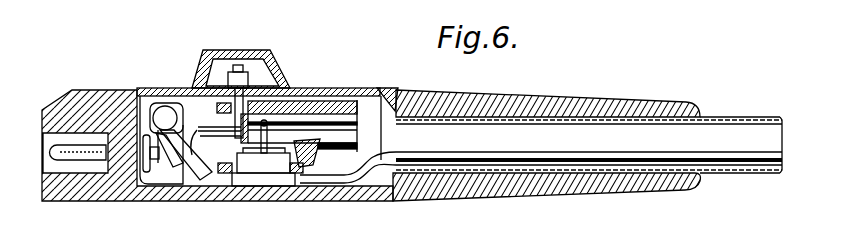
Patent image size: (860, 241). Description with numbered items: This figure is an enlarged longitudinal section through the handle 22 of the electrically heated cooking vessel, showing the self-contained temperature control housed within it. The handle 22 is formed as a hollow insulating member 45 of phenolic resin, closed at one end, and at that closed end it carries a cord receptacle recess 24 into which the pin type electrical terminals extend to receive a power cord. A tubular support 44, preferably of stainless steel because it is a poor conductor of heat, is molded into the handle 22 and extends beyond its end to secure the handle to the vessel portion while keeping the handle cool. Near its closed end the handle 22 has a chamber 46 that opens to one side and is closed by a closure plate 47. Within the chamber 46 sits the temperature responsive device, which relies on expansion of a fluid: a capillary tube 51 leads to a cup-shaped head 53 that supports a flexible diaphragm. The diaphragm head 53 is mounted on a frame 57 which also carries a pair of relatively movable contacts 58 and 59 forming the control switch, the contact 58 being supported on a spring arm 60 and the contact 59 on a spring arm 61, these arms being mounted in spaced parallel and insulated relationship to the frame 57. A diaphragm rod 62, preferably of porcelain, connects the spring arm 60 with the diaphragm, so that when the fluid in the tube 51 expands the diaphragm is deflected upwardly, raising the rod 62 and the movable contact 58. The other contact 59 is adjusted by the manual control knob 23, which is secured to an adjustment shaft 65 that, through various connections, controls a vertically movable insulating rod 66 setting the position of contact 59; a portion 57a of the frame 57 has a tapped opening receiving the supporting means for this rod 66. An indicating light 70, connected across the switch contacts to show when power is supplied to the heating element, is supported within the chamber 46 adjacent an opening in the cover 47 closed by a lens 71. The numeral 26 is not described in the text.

The handle 22 is at (544, 96).
The control knob 23 is at (226, 52).
The cord receptacle recess 24 is at (50, 166).
The plunger pin 26 is at (45, 148).
The tubular support 44 is at (735, 118).
The hollow insulating member 45 is at (383, 201).
The chamber 46 is at (382, 96).
The closure plate 47 is at (371, 113).
The capillary tube 51 is at (391, 152).
The head 53 is at (250, 182).
The frame 57 is at (314, 157).
The portion of frame 57a is at (284, 100).
The contact 58 is at (186, 163).
The contact 59 is at (206, 142).
The spring arm 60 is at (300, 108).
The spring arm 61 is at (299, 112).
The diaphragm rod 62 is at (263, 161).
The adjustment shaft 65 is at (241, 62).
The insulating rod 66 is at (226, 120).
The indicating light 70 is at (163, 107).
The lens 71 is at (168, 97).